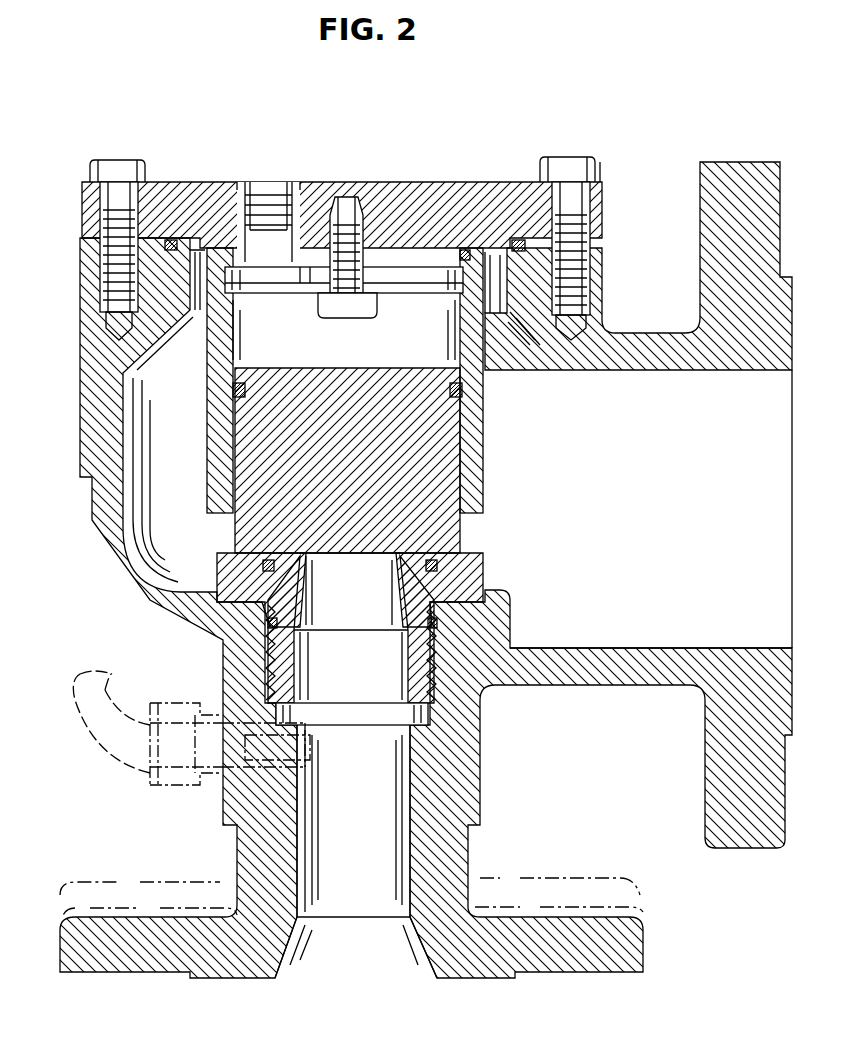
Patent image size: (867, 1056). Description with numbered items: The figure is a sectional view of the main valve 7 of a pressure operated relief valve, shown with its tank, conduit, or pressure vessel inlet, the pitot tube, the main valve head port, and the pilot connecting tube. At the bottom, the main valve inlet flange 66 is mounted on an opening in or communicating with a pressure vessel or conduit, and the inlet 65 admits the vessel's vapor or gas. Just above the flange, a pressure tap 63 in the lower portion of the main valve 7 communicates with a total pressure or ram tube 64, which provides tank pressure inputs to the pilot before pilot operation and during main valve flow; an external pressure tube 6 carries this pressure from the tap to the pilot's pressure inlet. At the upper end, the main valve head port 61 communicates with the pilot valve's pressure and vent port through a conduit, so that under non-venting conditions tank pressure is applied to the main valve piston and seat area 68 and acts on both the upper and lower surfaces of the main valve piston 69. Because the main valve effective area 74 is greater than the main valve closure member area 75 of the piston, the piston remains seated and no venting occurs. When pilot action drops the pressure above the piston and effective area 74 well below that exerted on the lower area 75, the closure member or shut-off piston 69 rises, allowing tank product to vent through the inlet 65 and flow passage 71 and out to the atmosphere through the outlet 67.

The main valve head port 61 is at (289, 183).
The main valve effective area 74 is at (328, 380).
The main valve piston and/or seat area 68 is at (407, 356).
The main valve piston 69 is at (357, 466).
The main valve closure member area 75 is at (334, 560).
The flow passage 71 is at (362, 614).
The outlet 67 is at (638, 405).
The external pressure tube 6 is at (106, 748).
The pressure tap 63 is at (218, 787).
The ram tube 64 is at (312, 770).
The main valve inlet flange 66 is at (137, 975).
The inlet 65 is at (366, 963).
The main valve 7 is at (612, 972).